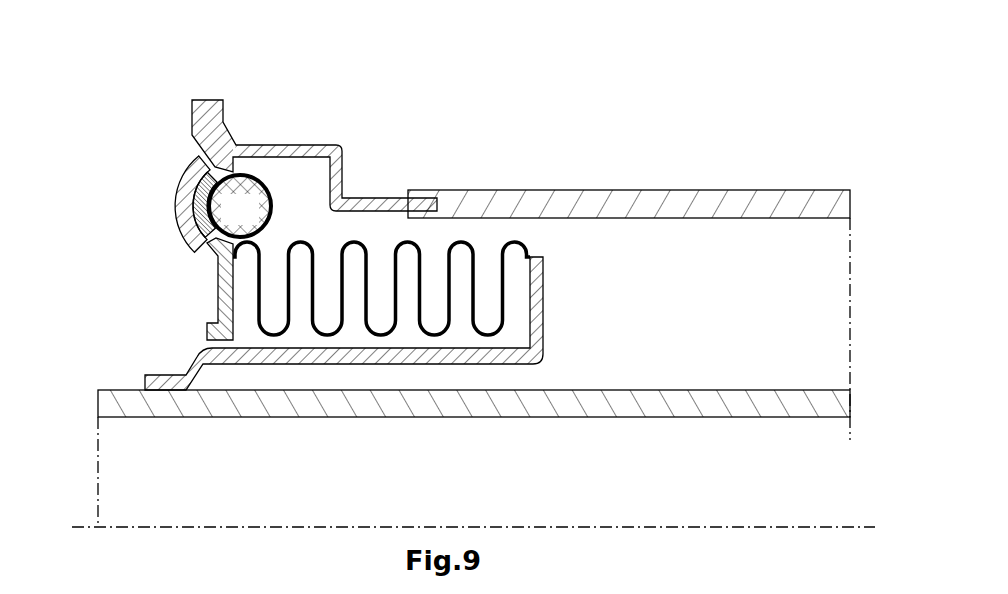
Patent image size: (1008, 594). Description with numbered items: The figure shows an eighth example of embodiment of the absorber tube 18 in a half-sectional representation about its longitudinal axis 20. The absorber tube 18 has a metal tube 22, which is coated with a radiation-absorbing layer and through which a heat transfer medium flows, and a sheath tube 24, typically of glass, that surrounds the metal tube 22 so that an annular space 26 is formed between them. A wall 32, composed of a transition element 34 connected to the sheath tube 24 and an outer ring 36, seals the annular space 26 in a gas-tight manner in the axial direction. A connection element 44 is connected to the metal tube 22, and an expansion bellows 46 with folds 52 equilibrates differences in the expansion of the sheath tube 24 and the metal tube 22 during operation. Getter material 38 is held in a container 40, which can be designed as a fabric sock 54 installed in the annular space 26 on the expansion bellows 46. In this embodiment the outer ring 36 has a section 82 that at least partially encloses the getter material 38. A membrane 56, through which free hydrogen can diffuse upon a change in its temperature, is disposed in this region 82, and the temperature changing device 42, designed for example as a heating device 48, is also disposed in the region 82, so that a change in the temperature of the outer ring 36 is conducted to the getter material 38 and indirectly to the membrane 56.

The absorber tube 18 is at (700, 128).
The longitudinal axis 20 is at (138, 527).
The metal tube 22 is at (683, 390).
The sheath tube 24 is at (503, 202).
The annular space 26 is at (745, 295).
The wall 32 is at (153, 118).
The transition element 34 is at (300, 145).
The outer ring 36 is at (191, 112).
The getter material 38 is at (256, 222).
The container 40 is at (252, 172).
The fabric sock 54 is at (240, 206).
The temperature changing device 42 is at (178, 220).
The heating device 48 is at (192, 204).
The connection element 44 is at (538, 334).
The expansion bellows 46 is at (447, 237).
The folds 52 is at (298, 282).
The membrane 56 is at (185, 180).
The section 82 is at (197, 272).